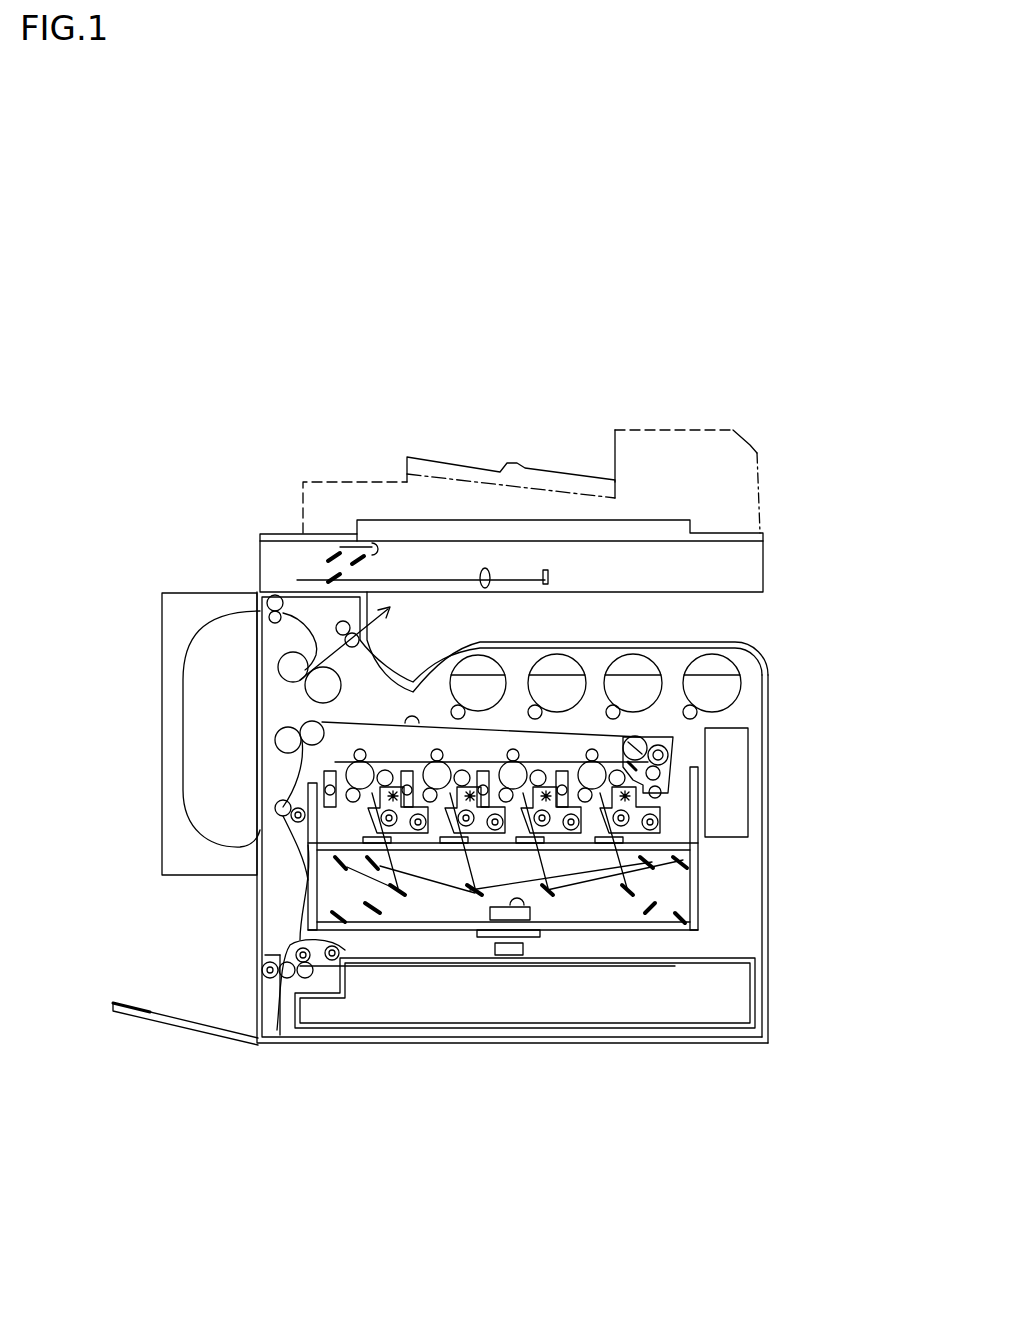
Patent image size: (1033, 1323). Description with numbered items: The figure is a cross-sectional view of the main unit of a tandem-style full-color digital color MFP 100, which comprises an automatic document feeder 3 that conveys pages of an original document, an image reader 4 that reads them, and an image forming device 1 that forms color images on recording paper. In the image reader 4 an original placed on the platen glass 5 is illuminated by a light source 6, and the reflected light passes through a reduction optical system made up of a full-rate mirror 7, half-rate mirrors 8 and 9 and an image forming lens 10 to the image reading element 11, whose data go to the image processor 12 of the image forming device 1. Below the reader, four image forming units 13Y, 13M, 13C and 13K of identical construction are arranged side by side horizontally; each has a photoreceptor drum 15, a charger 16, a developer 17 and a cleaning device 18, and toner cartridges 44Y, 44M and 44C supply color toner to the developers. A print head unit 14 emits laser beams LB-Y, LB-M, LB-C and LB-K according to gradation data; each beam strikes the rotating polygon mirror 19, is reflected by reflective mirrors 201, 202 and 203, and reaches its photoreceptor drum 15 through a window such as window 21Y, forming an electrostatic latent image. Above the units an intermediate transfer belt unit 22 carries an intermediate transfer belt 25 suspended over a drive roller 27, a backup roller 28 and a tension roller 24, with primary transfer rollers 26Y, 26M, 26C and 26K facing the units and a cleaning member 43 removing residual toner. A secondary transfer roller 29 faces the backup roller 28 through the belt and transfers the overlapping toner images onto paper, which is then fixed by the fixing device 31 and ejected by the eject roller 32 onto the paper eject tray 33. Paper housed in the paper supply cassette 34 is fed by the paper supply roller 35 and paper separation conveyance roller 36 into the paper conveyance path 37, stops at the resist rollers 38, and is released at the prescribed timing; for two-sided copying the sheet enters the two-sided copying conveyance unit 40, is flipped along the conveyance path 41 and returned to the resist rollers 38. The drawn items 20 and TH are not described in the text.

The color MFP 100 is at (190, 400).
The image forming device 1 is at (775, 740).
The automatic document feeder 3 is at (675, 430).
The image reader 4 is at (765, 568).
The platen glass 5 is at (607, 668).
The light source 6 is at (378, 545).
The full-rate mirror 7 is at (356, 555).
The half-rate mirror 8 is at (333, 553).
The half-rate mirror 9 is at (333, 576).
The image forming lens 10 is at (477, 567).
The image reading element 11 is at (547, 572).
The image processor 12 is at (737, 785).
The image forming unit 13K is at (355, 818).
The image forming unit 13C is at (452, 845).
The image forming unit 13M is at (560, 845).
The image forming unit 13Y is at (676, 825).
The print head unit 14 is at (710, 900).
The photoreceptor drum 15 is at (700, 700).
The charger 16 is at (705, 843).
The developer 17 is at (652, 835).
The cleaning device 18 is at (595, 905).
The polygon mirror 19 is at (545, 905).
The laser scanning unit 20 is at (705, 883).
The reflective mirror 201 is at (746, 958).
The reflective mirror 202 is at (693, 866).
The reflective mirror 203 is at (670, 930).
The window 21Y is at (627, 898).
The intermediate transfer belt unit 22 is at (412, 723).
The tension roller 24 is at (335, 762).
The intermediate transfer belt 25 is at (437, 748).
The primary transfer roller 26K is at (383, 716).
The primary transfer roller 26C is at (468, 656).
The primary transfer roller 26M is at (534, 663).
The primary transfer roller 26Y is at (637, 662).
The drive roller 27 is at (648, 748).
The backup roller 28 is at (295, 717).
The secondary transfer roller 29 is at (300, 732).
The fixing device 31 is at (286, 652).
The eject roller 32 is at (296, 652).
The paper eject tray 33 is at (538, 642).
The paper supply cassette 34 is at (745, 995).
The paper supply roller 35 is at (300, 935).
The paper separation conveyance roller 36 is at (268, 947).
The paper conveyance path 37 is at (345, 952).
The resist rollers 38 is at (275, 805).
The two-sided copying conveyance unit 40 is at (158, 786).
The conveyance path 41 is at (283, 613).
The cleaning member 43 is at (686, 750).
The toner cartridge 44C is at (540, 708).
The toner cartridge 44M is at (703, 668).
The toner cartridge 44Y is at (720, 656).
The laser beam LB-K is at (348, 885).
The laser beam LB-C is at (392, 902).
The laser beam LB-M is at (678, 935).
The laser beam LB-Y is at (684, 925).
The thermistor TH is at (507, 957).